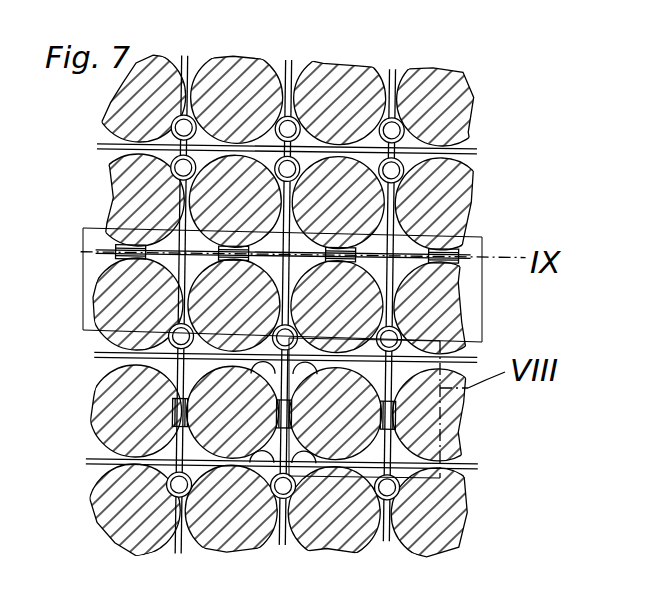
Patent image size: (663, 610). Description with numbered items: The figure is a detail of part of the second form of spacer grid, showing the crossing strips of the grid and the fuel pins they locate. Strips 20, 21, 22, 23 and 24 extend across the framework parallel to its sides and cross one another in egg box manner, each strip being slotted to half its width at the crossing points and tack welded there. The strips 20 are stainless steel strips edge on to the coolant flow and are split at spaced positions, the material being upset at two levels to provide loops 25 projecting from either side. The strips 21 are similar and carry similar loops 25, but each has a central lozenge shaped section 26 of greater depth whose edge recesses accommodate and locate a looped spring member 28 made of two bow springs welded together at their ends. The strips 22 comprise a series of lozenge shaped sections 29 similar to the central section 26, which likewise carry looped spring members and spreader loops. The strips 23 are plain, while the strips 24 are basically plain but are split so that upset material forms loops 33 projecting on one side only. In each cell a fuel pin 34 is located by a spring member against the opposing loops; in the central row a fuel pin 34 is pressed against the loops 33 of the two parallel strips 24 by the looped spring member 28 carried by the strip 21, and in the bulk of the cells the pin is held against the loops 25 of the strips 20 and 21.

The strip 20 is at (292, 66).
The strip 21 is at (188, 66).
The strip 22 is at (190, 250).
The plain strip 23 is at (98, 151).
The strip 24 is at (95, 357).
The loop 25 is at (265, 72).
The central lozenge shaped section 26 is at (172, 398).
The looped spring member 28 is at (172, 418).
The lozenge shaped section 29 is at (445, 248).
The loop 33 is at (265, 463).
The fuel pin 34 is at (415, 126).